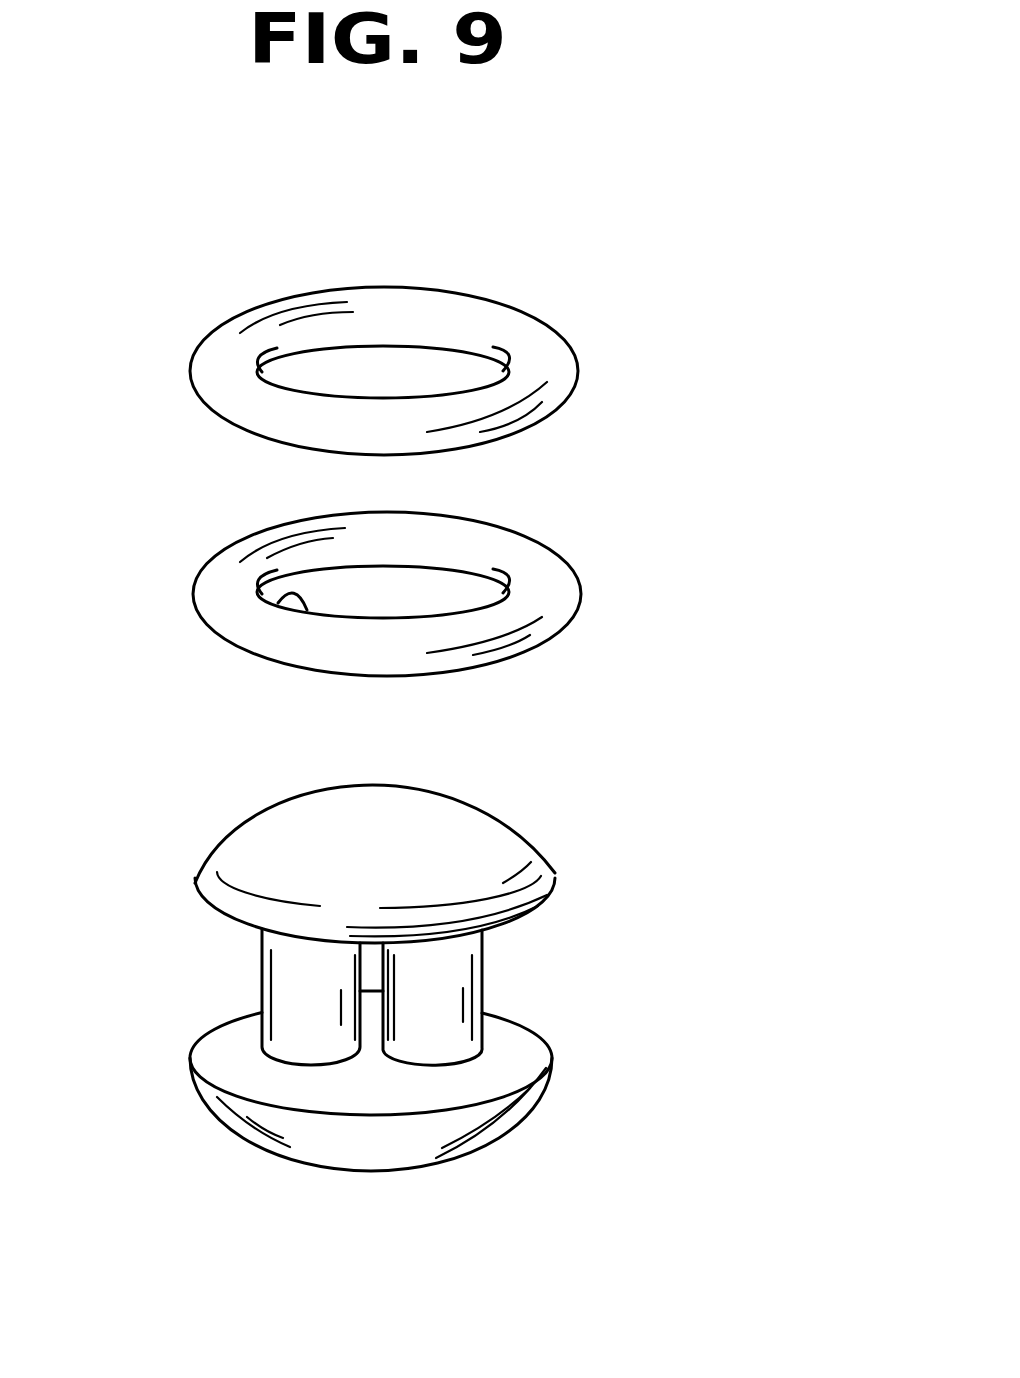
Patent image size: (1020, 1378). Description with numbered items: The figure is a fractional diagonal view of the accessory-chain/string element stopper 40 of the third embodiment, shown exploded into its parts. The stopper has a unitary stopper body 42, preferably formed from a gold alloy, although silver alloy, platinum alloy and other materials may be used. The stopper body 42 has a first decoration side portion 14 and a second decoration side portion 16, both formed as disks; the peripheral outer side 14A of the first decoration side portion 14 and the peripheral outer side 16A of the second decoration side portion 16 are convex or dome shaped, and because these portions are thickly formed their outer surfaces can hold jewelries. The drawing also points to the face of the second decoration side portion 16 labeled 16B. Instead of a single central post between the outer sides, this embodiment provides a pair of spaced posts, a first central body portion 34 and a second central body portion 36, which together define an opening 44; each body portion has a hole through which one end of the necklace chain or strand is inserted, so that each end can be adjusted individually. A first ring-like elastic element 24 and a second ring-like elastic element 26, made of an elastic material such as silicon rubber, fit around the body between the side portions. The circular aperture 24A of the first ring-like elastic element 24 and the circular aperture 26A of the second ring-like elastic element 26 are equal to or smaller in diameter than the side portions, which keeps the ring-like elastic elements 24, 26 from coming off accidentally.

The accessory-chain/string element stopper 40 is at (782, 347).
The first ring-like elastic element 24 is at (578, 340).
The circular aperture 24A is at (473, 312).
The second ring-like elastic element 26 is at (580, 562).
The circular aperture 26A is at (287, 598).
The stopper body 42 is at (683, 865).
The first decoration side portion 14 is at (542, 846).
The peripheral outer side 14A is at (488, 828).
The first central body portion 34 is at (258, 965).
The second central body portion 36 is at (505, 980).
The opening 44 is at (372, 1031).
The second decoration side portion 16 is at (485, 1147).
The peripheral outer side 16A is at (410, 1147).
The base top surface 16B is at (343, 1097).